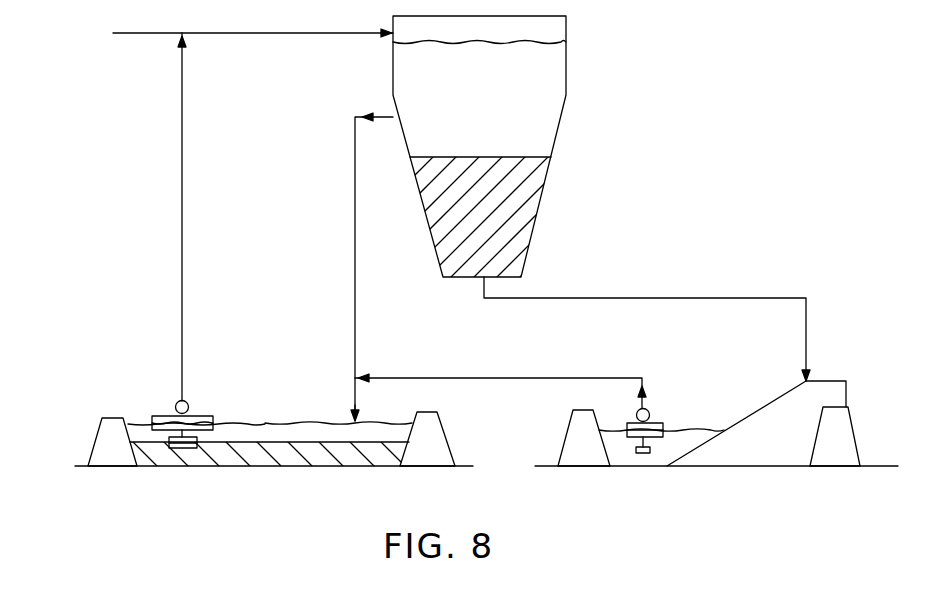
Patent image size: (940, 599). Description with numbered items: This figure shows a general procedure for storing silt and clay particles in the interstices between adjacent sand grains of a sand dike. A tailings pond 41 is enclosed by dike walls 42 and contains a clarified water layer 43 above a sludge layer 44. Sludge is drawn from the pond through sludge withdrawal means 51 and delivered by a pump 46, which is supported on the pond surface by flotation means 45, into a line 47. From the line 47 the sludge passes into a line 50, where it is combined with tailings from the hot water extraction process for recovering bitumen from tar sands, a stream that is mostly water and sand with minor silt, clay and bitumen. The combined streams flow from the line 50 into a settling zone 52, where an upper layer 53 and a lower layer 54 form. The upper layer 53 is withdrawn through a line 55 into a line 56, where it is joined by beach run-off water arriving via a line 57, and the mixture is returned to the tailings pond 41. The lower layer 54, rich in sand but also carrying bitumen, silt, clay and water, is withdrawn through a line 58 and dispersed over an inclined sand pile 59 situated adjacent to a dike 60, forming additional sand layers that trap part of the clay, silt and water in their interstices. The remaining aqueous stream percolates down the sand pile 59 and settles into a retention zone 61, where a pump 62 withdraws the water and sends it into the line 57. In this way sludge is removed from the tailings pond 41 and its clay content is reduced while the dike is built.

The tailings pond 41 is at (280, 421).
The dike walls 42 is at (95, 440).
The clarified water layer 43 is at (247, 424).
The sludge layer 44 is at (272, 452).
The flotation means 45 is at (205, 416).
The pump 46 is at (177, 404).
The line 47 is at (182, 193).
The line 50 is at (278, 33).
The sludge withdrawal means 51 is at (181, 450).
The settling zone 52 is at (567, 75).
The upper layer 53 is at (405, 71).
The lower layer 54 is at (513, 211).
The line 55 is at (355, 197).
The line 56 is at (355, 398).
The line 57 is at (428, 378).
The line 58 is at (612, 298).
The inclined sand pile 59 is at (840, 381).
The dike 60 is at (566, 440).
The retention zone 61 is at (683, 437).
The pump 62 is at (650, 411).